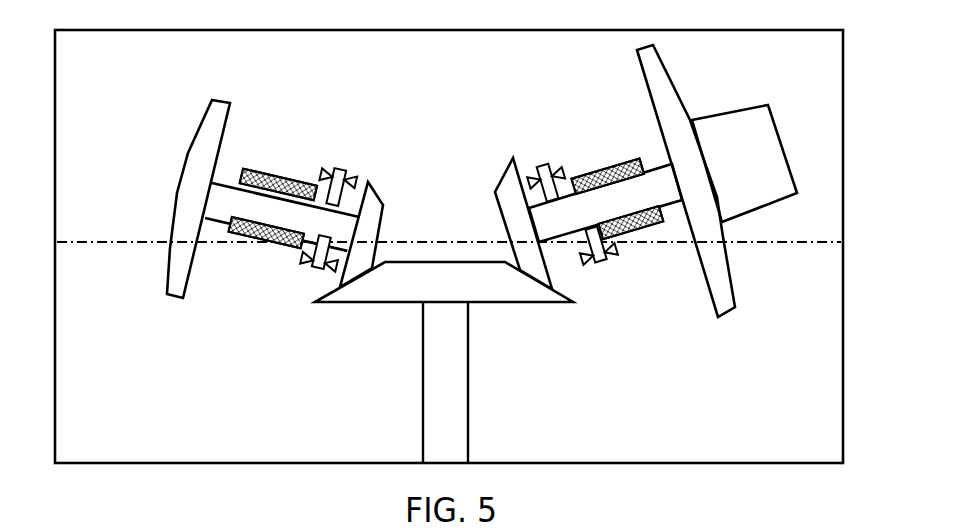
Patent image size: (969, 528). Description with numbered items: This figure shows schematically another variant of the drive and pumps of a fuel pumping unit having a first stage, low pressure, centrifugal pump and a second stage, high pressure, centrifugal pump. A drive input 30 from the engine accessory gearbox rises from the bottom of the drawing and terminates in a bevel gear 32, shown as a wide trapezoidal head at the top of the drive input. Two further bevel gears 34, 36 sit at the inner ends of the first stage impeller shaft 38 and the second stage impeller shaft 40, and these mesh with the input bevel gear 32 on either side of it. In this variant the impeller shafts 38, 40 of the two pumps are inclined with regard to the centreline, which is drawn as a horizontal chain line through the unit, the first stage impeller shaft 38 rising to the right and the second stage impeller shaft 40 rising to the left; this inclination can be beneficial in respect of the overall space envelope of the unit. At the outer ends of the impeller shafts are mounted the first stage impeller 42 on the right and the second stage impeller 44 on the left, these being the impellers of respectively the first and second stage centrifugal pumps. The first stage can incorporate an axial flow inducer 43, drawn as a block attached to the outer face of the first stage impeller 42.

The drive input 30 is at (445, 390).
The bevel gear 32 is at (438, 268).
The bevel gear 34 is at (507, 182).
The bevel gear 36 is at (376, 193).
The first stage impeller shaft 38 is at (660, 180).
The second stage impeller shaft 40 is at (228, 208).
The first stage impeller 42 is at (673, 120).
The axial flow inducer 43 is at (740, 123).
The second stage impeller 44 is at (210, 132).